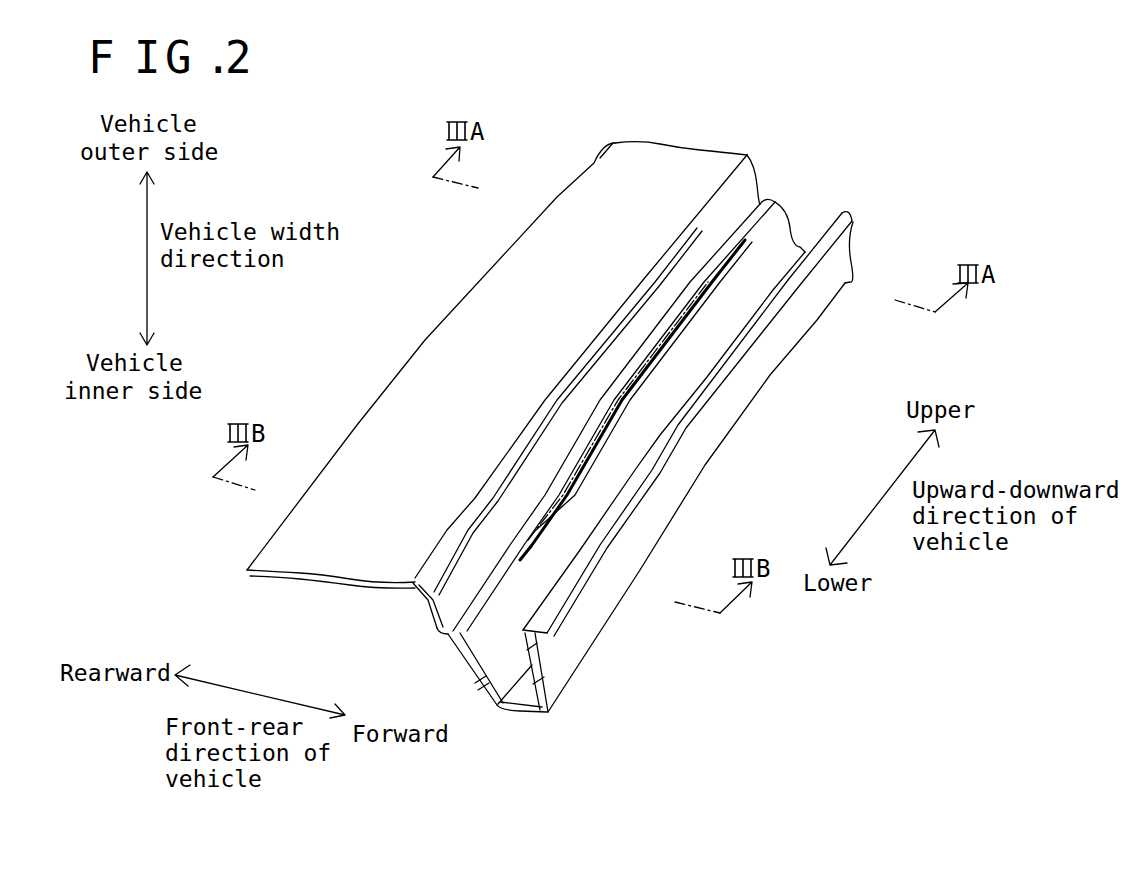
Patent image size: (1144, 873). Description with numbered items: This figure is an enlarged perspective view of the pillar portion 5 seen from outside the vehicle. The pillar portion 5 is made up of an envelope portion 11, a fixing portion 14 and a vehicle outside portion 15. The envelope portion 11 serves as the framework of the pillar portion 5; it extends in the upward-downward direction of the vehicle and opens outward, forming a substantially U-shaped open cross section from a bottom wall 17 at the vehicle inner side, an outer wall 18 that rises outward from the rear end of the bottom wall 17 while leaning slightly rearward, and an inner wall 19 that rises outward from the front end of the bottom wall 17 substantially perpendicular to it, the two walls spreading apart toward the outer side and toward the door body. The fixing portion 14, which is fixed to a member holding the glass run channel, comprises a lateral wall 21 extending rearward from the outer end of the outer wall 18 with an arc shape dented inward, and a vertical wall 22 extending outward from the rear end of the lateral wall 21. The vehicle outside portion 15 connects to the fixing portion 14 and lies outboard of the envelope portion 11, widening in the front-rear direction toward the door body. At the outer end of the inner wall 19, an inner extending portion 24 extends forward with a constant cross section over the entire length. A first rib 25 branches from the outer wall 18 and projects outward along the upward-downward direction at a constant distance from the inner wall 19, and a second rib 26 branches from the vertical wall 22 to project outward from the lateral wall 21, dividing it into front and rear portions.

The pillar portion 5 is at (848, 156).
The envelope portion 11 is at (790, 222).
The fixing portion 14 is at (753, 163).
The vehicle outside portion 15 is at (596, 165).
The bottom wall 17 is at (520, 710).
The outer wall 18 is at (477, 686).
The inner wall 19 is at (540, 683).
The lateral wall 21 is at (440, 640).
The vertical wall 22 is at (413, 602).
The inner extending portion 24 is at (610, 517).
The first rib 25 is at (525, 556).
The second rib 26 is at (467, 530).